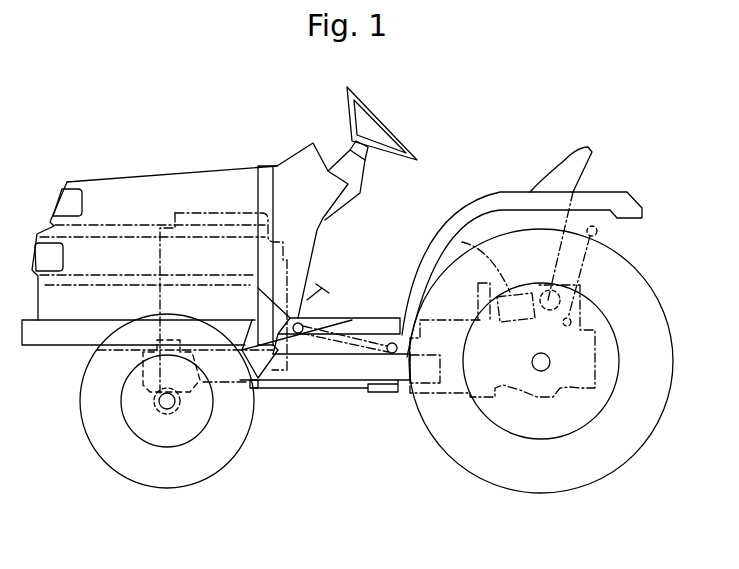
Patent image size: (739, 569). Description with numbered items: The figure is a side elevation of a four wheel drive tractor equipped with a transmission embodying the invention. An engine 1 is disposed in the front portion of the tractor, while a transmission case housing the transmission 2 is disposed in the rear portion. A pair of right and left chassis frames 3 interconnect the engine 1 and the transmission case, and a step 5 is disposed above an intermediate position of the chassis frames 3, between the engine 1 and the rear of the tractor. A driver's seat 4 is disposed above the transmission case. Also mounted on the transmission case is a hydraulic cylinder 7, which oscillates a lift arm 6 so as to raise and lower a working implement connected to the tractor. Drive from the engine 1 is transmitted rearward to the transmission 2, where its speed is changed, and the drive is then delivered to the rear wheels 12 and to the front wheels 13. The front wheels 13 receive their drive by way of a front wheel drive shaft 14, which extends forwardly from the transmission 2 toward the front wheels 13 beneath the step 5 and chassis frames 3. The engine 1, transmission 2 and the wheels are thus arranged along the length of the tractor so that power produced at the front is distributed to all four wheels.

The engine 1 is at (217, 213).
The transmission 2 is at (445, 393).
The chassis frames 3 is at (328, 373).
The driver's seat 4 is at (556, 158).
The step 5 is at (355, 318).
The lift arm 6 is at (587, 265).
The hydraulic cylinder 7 is at (462, 242).
The rear wheels 12 is at (580, 478).
The front wheels 13 is at (176, 488).
The front wheel drive shaft 14 is at (353, 391).